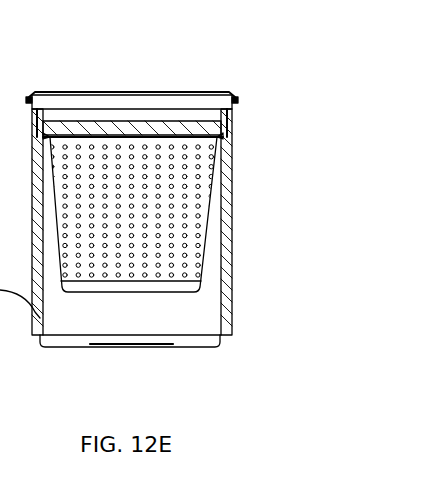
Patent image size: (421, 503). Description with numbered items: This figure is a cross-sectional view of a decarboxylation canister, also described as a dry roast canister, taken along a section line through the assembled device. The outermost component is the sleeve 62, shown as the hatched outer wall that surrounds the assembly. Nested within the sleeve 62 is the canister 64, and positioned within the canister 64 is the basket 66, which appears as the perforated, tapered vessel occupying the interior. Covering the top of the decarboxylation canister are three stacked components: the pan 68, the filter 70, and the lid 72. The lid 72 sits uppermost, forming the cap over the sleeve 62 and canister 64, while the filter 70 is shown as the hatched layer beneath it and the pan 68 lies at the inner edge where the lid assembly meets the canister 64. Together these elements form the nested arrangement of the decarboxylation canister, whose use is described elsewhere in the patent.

The sleeve 62 is at (225, 298).
The canister 64 is at (210, 277).
The basket 66 is at (175, 195).
The pan 68 is at (215, 116).
The filter 70 is at (135, 133).
The lid 72 is at (65, 92).